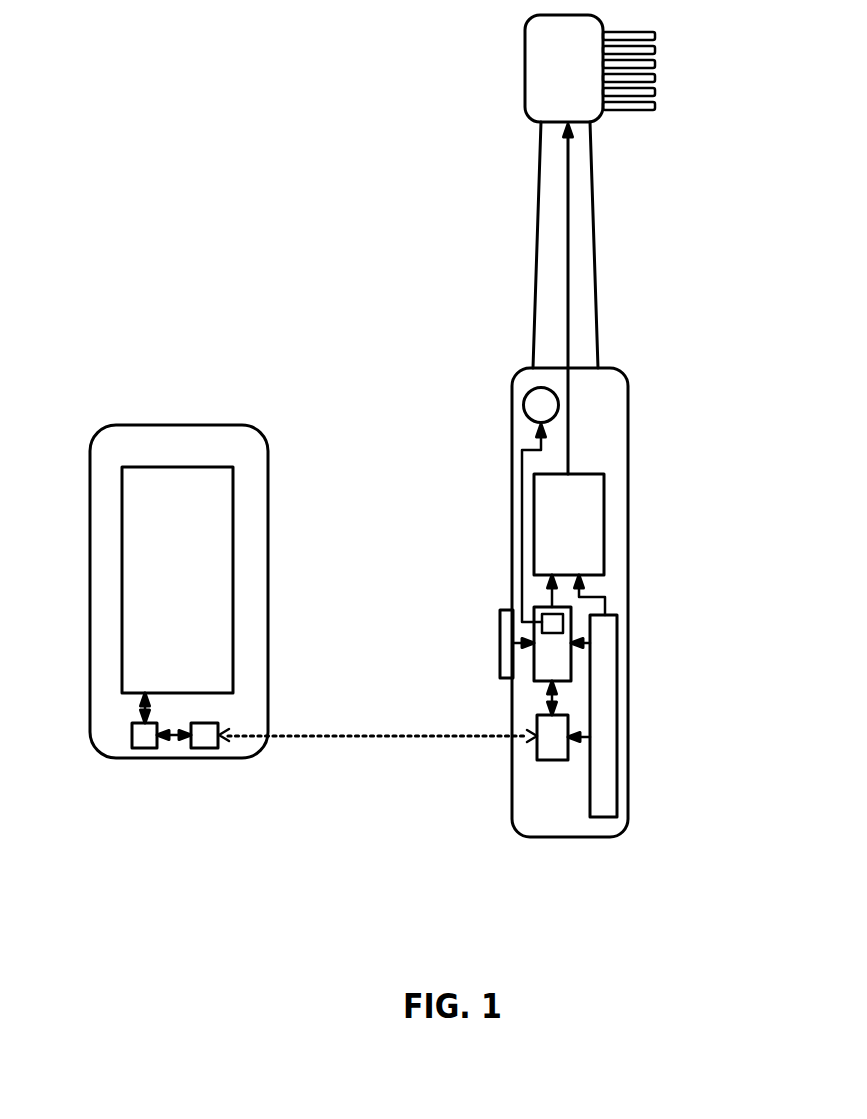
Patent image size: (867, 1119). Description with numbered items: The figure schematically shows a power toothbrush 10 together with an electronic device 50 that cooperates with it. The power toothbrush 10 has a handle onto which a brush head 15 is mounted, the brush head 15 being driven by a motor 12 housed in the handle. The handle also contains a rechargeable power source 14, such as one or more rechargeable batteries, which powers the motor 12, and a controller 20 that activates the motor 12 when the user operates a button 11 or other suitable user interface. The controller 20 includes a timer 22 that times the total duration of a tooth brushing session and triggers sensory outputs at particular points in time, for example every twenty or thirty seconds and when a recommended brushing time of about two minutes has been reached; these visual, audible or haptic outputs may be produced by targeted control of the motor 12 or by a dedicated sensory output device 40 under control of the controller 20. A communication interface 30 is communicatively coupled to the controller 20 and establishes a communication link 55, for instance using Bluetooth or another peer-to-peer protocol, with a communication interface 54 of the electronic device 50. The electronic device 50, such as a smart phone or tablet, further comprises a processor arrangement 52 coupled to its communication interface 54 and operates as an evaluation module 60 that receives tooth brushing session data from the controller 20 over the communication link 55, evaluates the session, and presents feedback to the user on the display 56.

The power toothbrush 10 is at (628, 797).
The button 11 is at (501, 641).
The motor 12 is at (604, 520).
The rechargeable power source 14 is at (618, 710).
The brush head 15 is at (598, 276).
The controller 20 is at (537, 688).
The timer 22 is at (543, 622).
The communication interface 30 is at (539, 760).
The sensory output device 40 is at (523, 401).
The electronic device 50 is at (180, 425).
The processor arrangement 52 is at (146, 740).
The communication interface 54 is at (207, 740).
The communication link 55 is at (362, 740).
The display 56 is at (233, 468).
The evaluation module 60 is at (108, 801).